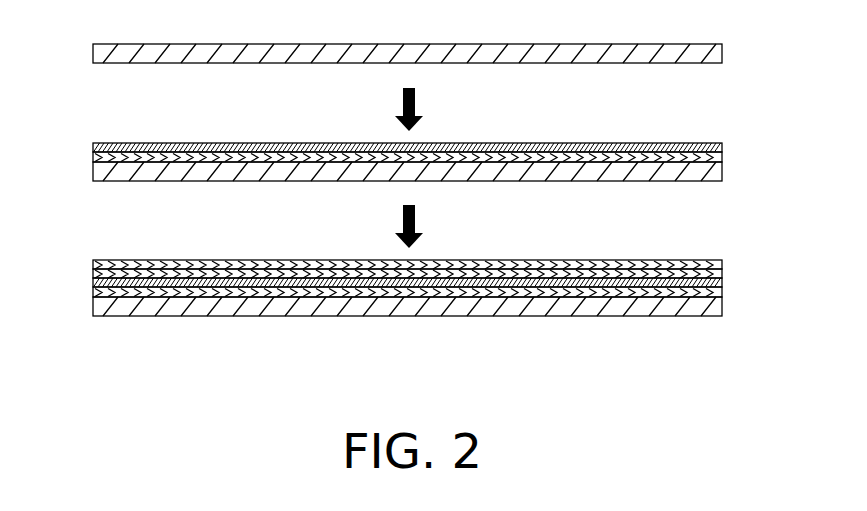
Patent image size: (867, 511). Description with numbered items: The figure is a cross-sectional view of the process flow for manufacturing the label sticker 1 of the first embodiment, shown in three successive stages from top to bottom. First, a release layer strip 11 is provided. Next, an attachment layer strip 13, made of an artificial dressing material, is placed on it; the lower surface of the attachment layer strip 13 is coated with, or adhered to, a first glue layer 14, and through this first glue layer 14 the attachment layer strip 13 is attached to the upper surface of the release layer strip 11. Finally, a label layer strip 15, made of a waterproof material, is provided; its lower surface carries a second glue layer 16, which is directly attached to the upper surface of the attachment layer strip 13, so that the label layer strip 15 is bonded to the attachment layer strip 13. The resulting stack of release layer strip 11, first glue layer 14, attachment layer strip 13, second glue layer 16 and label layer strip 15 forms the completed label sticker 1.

The label sticker 1 is at (100, 232).
The release layer strip 11 is at (724, 52).
The attachment layer strip 13 is at (724, 147).
The first glue layer 14 is at (724, 157).
The label layer strip 15 is at (92, 264).
The second glue layer 16 is at (92, 279).